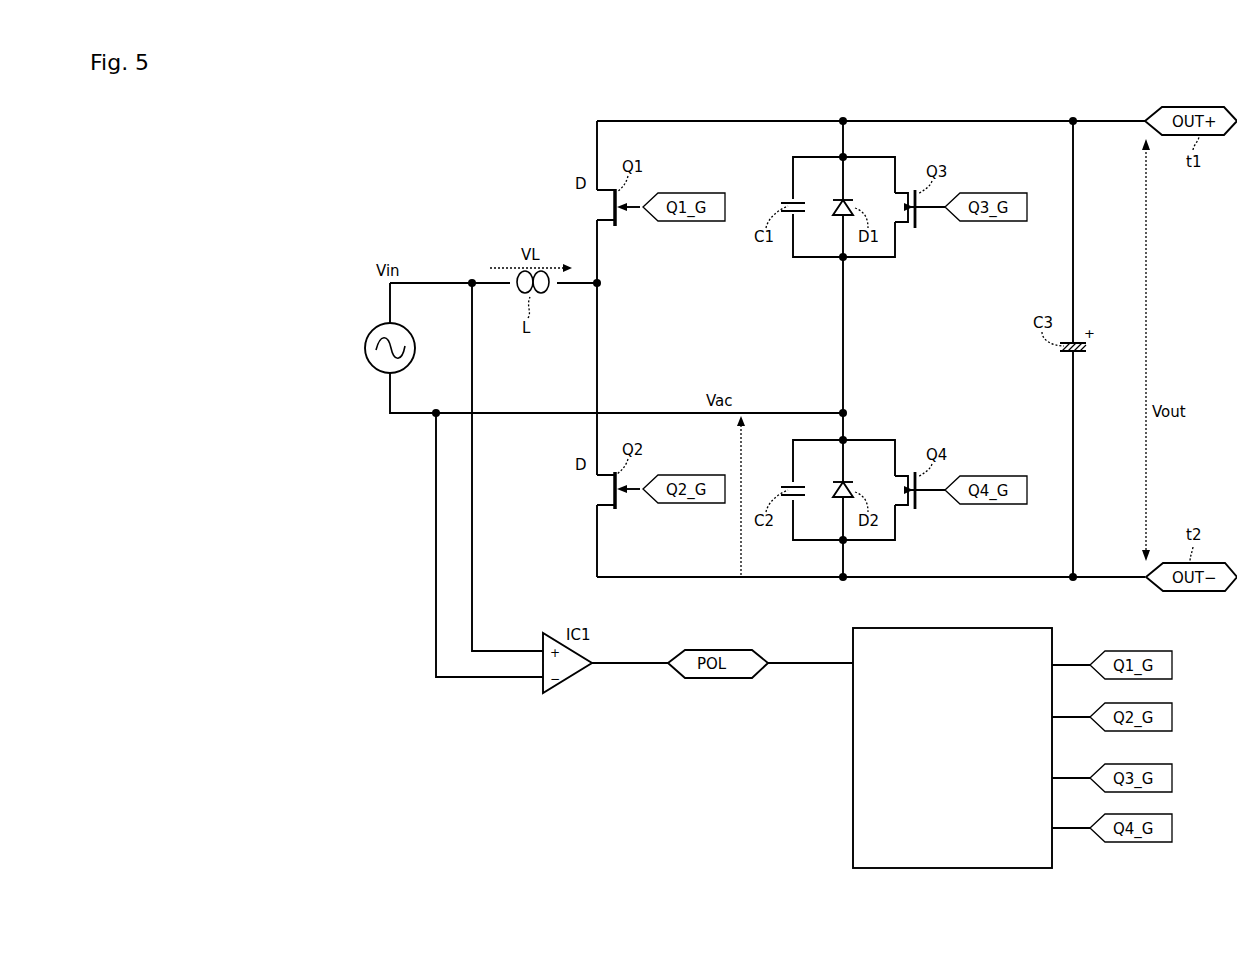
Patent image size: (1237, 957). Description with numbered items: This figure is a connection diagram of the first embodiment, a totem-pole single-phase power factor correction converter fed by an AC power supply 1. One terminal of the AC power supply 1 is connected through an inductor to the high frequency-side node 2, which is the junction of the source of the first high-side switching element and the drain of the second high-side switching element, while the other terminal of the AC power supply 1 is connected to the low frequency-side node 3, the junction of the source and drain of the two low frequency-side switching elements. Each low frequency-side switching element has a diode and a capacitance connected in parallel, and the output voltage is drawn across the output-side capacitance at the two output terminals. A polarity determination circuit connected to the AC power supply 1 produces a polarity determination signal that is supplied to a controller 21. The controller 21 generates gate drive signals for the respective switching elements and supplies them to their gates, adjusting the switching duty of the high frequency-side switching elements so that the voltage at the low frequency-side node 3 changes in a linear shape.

The AC power supply 1 is at (372, 330).
The high frequency-side node 2 is at (603, 283).
The low frequency-side node 3 is at (848, 409).
The controller 21 is at (851, 749).